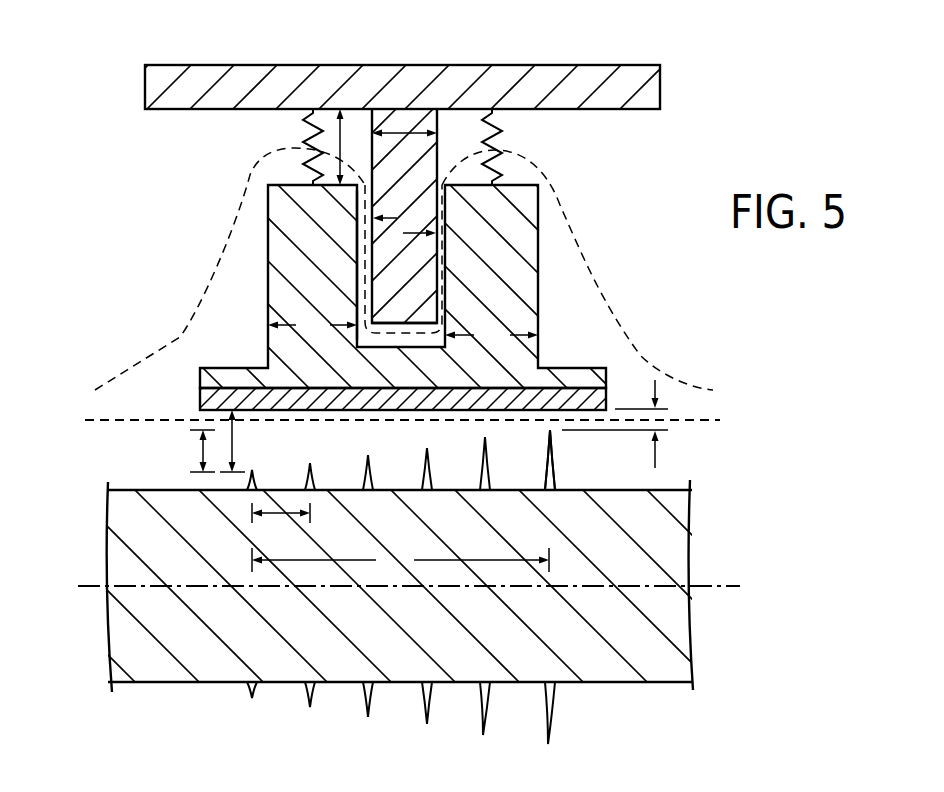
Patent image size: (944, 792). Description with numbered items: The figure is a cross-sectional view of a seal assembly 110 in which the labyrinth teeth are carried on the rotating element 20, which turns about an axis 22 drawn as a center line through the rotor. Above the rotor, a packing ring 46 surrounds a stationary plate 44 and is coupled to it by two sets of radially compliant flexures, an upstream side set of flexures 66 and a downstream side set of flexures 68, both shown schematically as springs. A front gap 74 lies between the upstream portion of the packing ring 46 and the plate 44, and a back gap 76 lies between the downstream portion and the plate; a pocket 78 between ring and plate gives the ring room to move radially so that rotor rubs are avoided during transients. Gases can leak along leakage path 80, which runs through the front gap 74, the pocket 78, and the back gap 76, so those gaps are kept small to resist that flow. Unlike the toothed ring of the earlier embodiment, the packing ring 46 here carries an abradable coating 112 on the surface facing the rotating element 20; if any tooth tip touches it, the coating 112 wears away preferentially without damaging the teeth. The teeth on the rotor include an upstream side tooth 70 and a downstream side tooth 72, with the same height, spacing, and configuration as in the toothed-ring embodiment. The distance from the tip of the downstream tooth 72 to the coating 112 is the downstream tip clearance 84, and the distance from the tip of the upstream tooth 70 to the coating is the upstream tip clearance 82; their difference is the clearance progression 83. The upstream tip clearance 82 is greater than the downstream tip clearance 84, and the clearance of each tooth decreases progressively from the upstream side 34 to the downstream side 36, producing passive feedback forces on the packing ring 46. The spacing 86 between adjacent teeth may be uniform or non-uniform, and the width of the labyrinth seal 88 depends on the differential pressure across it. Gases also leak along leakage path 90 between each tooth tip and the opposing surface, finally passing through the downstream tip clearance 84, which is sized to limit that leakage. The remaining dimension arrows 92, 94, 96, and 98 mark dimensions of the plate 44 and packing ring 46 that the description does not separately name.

The rotating element 20 is at (122, 642).
The axis 22 is at (712, 586).
The upstream side 34 is at (143, 298).
The downstream side 36 is at (628, 296).
The plate 44 is at (413, 110).
The packing ring 46 is at (520, 248).
The upstream side set of flexures 66 is at (310, 125).
The downstream side set of flexures 68 is at (506, 134).
The upstream side tooth 70 is at (250, 482).
The downstream side tooth 72 is at (547, 492).
The front gap 74 is at (354, 220).
The back gap 76 is at (455, 232).
The pocket 78 is at (388, 338).
The leakage path 80 is at (669, 375).
The upstream tip clearance 82 is at (234, 440).
The clearance progression 83 is at (198, 450).
The downstream tip clearance 84 is at (657, 456).
The spacing 86 is at (282, 518).
The width of the labyrinth seal 88 is at (400, 559).
The leakage path 90 is at (720, 420).
The spring height 92 is at (340, 109).
The stem width 94 is at (402, 131).
The left arm width 96 is at (312, 325).
The right arm width 98 is at (491, 335).
The seal assembly 110 is at (716, 124).
The abradable coating 112 is at (612, 400).